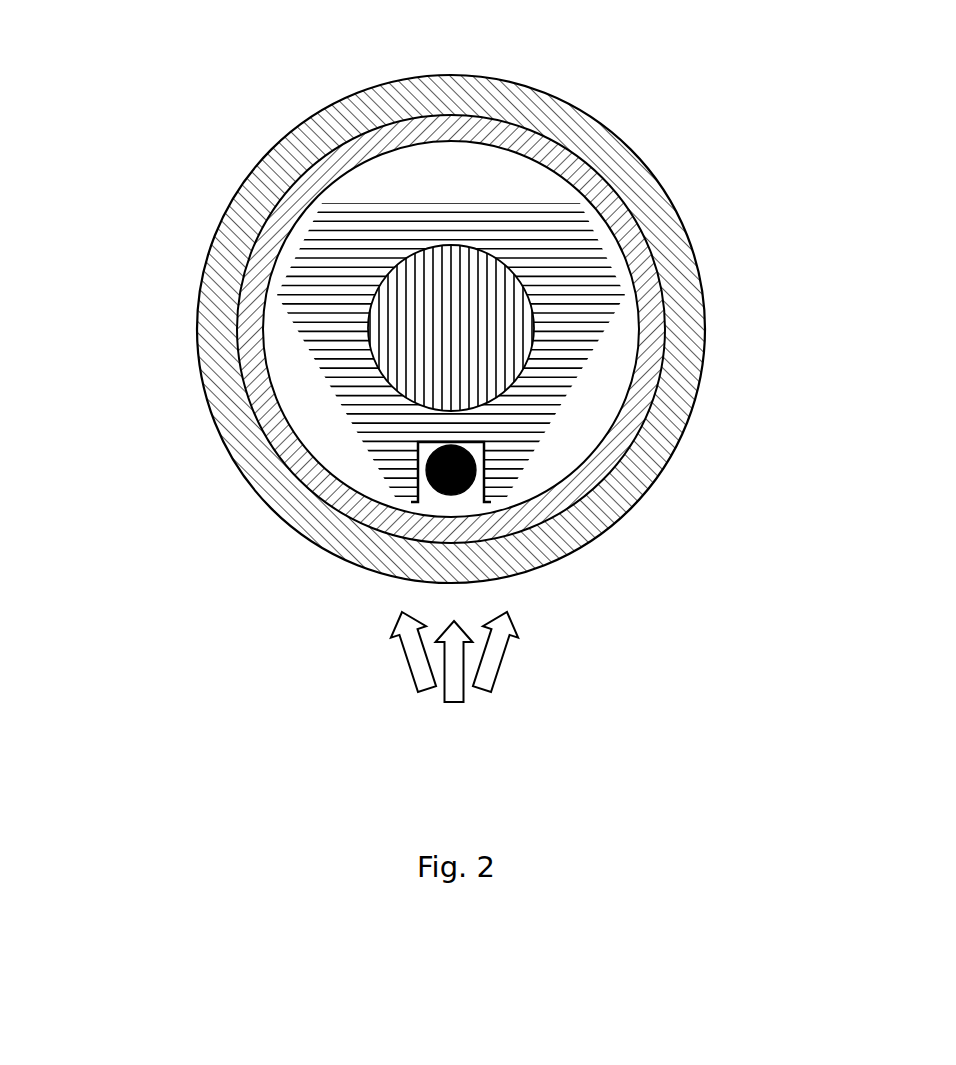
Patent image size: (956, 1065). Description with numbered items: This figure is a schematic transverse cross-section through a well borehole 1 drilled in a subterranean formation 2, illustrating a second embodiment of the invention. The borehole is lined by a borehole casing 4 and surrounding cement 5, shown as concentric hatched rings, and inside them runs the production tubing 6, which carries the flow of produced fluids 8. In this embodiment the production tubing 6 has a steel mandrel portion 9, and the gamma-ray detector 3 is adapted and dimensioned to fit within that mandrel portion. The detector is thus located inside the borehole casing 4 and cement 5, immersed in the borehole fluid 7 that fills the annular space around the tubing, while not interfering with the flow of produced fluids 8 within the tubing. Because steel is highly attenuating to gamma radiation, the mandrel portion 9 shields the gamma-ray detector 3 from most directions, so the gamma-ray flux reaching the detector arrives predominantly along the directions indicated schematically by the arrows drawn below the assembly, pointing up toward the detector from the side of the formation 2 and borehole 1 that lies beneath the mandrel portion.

The well borehole 1 is at (616, 115).
The subterranean formation 2 is at (209, 98).
The gamma-ray detector 3 is at (457, 495).
The borehole casing 4 is at (247, 302).
The cement 5 is at (218, 385).
The production tubing 6 is at (377, 382).
The borehole fluid 7 is at (355, 467).
The produced fluids 8 is at (447, 330).
The steel mandrel portion 9 is at (512, 453).